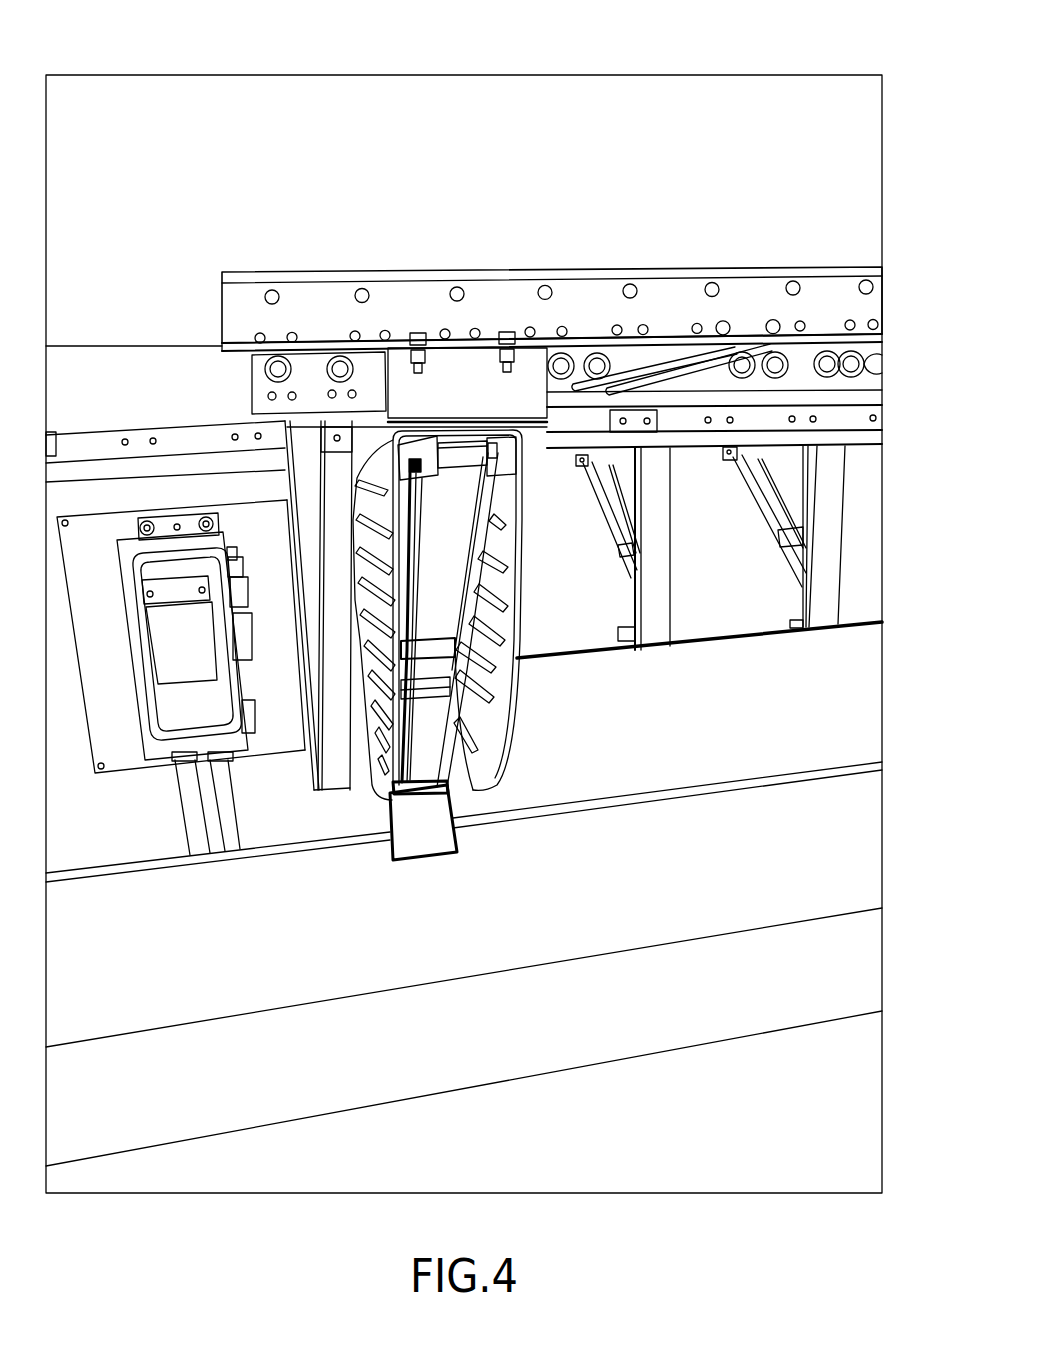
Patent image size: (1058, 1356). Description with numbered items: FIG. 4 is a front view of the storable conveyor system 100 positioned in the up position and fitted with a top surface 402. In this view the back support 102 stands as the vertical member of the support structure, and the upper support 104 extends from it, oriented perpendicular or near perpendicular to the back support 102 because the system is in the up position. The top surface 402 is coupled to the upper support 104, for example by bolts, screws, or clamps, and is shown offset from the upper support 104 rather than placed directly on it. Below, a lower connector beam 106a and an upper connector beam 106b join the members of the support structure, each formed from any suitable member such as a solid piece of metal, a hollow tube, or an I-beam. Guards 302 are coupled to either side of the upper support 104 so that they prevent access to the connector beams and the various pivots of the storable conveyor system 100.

The storable conveyor system 100 is at (483, 41).
The top surface 402 is at (847, 290).
The upper support 104 is at (507, 455).
The guards 302 is at (372, 468).
The lower connector beam 106a is at (423, 720).
The upper connector beam 106b is at (443, 580).
The back support 102 is at (418, 815).